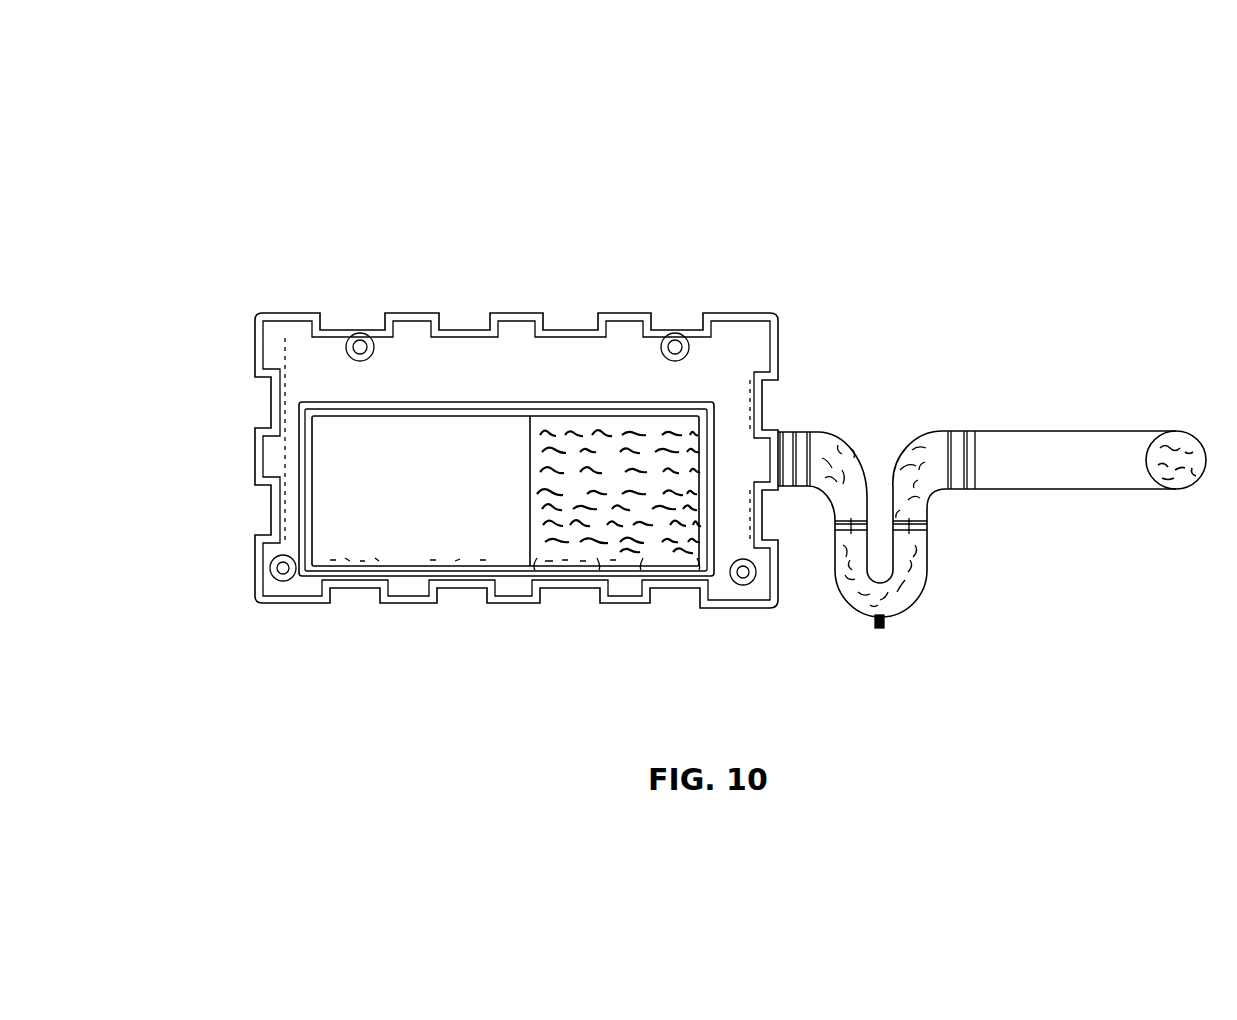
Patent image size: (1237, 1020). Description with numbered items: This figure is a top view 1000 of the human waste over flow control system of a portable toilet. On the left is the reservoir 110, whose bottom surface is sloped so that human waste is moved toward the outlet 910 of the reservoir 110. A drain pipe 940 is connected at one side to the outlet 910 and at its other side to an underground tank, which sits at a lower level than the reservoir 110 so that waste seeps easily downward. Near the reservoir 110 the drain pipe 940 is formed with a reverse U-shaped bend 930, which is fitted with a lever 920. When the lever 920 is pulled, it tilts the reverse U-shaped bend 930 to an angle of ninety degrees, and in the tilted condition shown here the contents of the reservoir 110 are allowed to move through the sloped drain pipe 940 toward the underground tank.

The top view 1000 is at (391, 182).
The reservoir 110 is at (303, 360).
The outlet 910 is at (776, 432).
The lever 920 is at (887, 625).
The reverse U-shaped bend 930 is at (913, 557).
The drain pipe 940 is at (1090, 472).